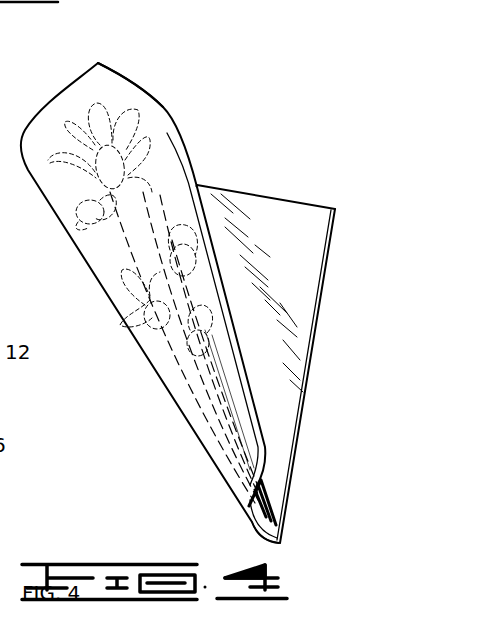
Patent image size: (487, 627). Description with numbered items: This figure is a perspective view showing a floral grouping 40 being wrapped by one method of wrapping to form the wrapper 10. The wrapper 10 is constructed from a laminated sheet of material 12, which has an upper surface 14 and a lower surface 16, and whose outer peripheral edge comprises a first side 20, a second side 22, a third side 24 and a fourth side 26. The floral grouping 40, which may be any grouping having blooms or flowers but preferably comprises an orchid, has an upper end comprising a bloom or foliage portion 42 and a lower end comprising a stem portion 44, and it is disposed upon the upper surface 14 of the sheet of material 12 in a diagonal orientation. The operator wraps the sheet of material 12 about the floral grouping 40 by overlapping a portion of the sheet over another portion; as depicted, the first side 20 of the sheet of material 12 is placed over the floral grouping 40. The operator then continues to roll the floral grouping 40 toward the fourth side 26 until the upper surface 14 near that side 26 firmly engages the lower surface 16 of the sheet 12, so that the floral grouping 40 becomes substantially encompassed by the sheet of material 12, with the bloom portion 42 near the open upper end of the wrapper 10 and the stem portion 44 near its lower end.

The wrapper 10 is at (288, 53).
The sheet of material 12 is at (306, 208).
The upper surface 14 is at (273, 210).
The lower surface 16 is at (167, 360).
The first side 20 is at (258, 503).
The second side 22 is at (240, 192).
The third side 24 is at (133, 82).
The fourth side 26 is at (302, 400).
The floral grouping 40 is at (162, 82).
The bloom or foliage portion 42 is at (77, 125).
The stem portion 44 is at (268, 518).